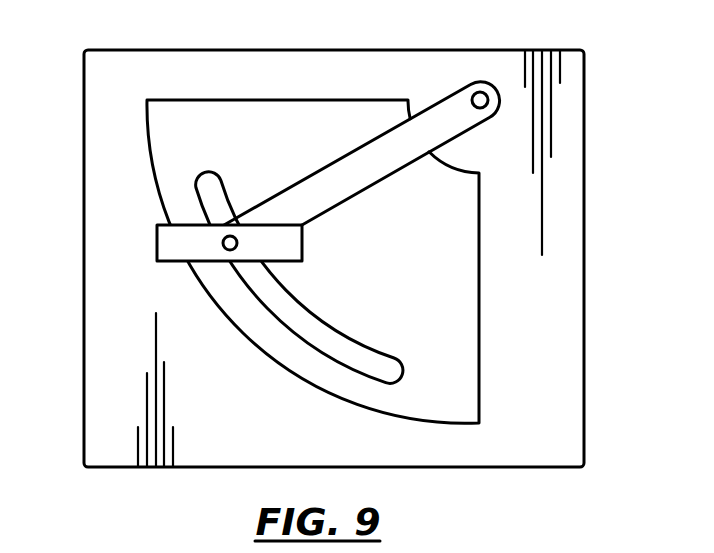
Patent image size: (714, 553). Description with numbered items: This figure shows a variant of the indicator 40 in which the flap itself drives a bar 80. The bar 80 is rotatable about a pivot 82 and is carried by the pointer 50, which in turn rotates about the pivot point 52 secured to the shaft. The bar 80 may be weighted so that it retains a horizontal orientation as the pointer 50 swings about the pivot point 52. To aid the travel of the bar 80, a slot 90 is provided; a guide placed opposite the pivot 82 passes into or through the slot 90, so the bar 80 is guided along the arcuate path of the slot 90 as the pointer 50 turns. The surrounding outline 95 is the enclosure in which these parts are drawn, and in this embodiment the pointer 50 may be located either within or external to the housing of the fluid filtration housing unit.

The indicator 40 is at (322, 388).
The pointer 50 is at (434, 120).
The pivot point 52 is at (489, 99).
The bar 80 is at (178, 241).
The pivot 82 is at (228, 250).
The slot 90 is at (308, 324).
The housing 95 is at (571, 250).